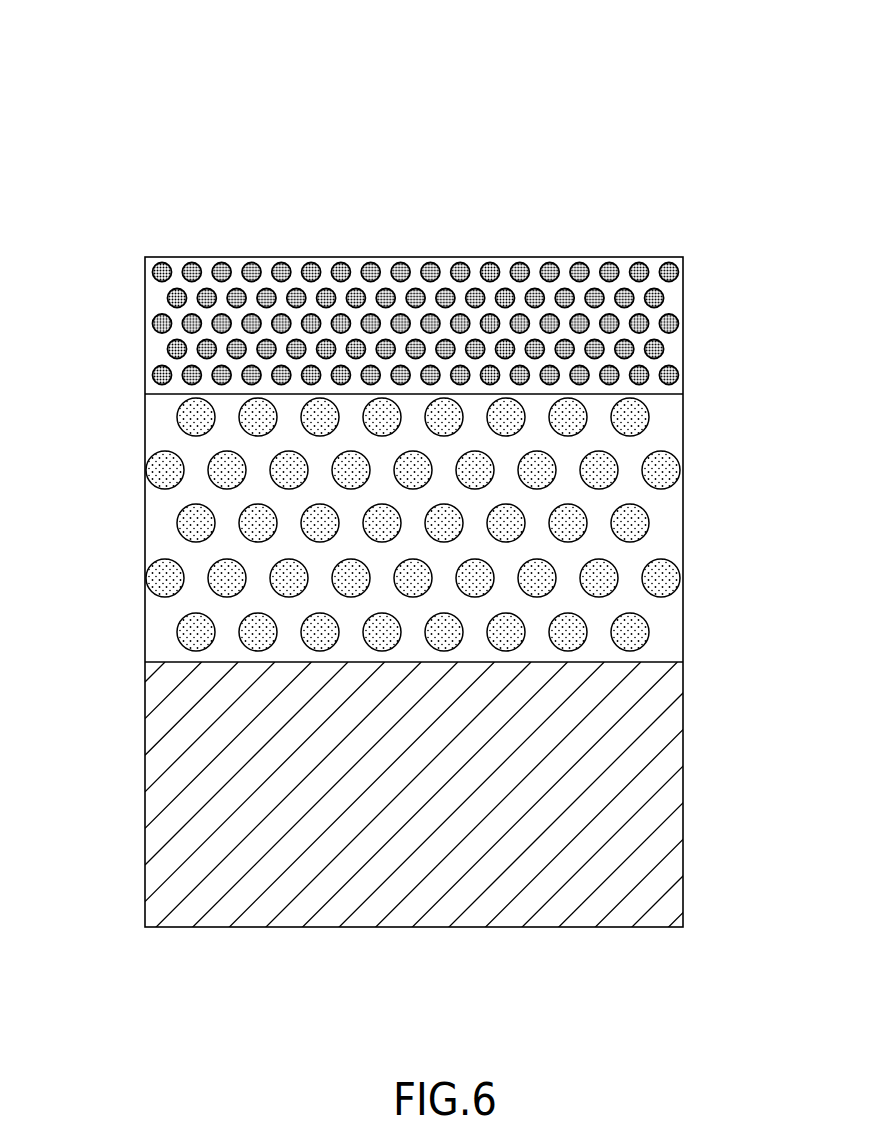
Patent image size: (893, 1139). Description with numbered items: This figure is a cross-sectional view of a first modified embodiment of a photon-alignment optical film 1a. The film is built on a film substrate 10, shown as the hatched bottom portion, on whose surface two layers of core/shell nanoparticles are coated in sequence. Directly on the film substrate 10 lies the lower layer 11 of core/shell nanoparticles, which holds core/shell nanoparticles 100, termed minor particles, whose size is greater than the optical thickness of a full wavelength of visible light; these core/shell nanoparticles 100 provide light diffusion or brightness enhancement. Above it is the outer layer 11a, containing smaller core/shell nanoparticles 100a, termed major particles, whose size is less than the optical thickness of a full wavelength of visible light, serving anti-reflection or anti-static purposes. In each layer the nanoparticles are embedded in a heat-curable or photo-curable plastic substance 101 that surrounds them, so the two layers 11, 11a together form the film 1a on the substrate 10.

The photon-alignment optical film 1a is at (282, 167).
The film substrate 10 is at (317, 943).
The lower layer of core/shell nanoparticles 11 is at (128, 416).
The outer layer of core/shell nanoparticles 11a is at (128, 266).
The core/shell nanoparticles 100 is at (177, 518).
The core/shell nanoparticles 100a is at (518, 263).
The heat-curable or photo-curable plastic substance 101 is at (673, 297).